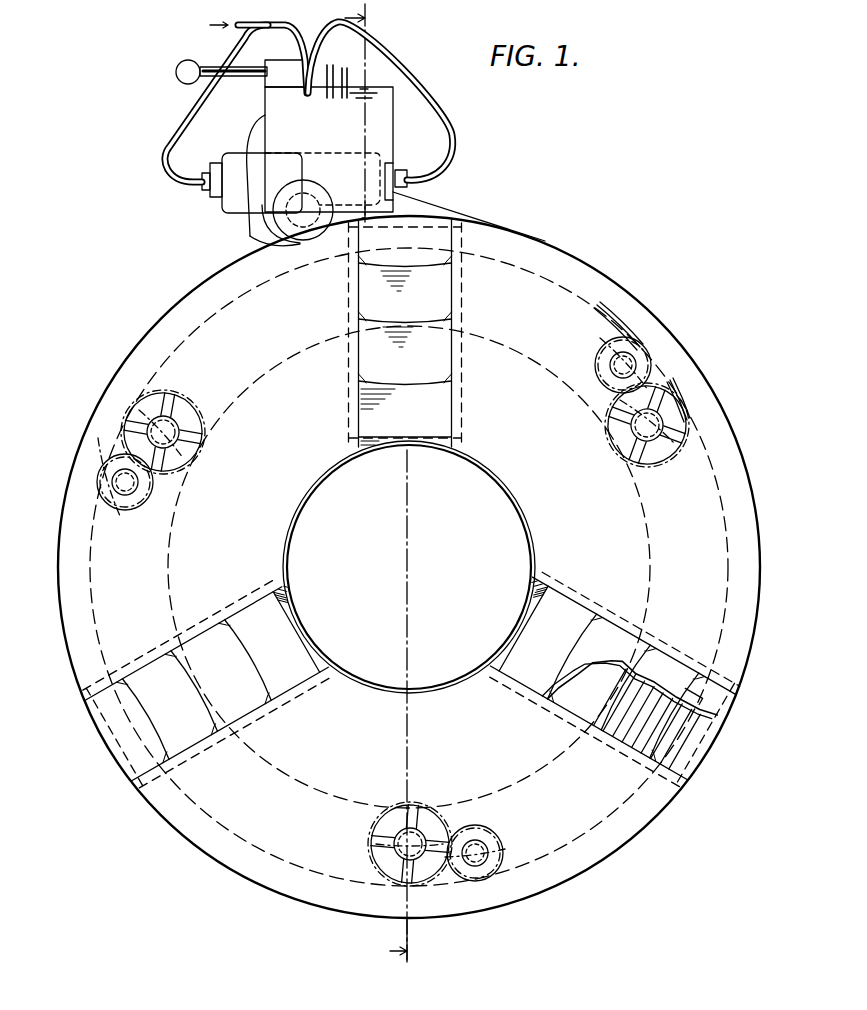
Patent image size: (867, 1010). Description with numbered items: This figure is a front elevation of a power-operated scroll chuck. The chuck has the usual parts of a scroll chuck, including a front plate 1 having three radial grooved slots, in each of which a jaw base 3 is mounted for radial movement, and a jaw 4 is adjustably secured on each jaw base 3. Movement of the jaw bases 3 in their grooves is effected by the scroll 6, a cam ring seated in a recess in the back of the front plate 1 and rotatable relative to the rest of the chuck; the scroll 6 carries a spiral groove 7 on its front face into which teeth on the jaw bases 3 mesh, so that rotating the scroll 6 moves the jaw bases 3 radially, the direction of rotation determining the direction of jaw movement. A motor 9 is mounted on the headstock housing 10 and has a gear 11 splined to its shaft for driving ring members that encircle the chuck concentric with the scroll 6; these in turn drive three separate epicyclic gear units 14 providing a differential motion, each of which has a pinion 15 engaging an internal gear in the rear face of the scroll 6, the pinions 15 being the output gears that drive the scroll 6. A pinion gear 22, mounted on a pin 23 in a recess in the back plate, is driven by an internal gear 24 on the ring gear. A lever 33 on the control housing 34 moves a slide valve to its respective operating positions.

The front plate 1 is at (200, 330).
The jaw base 3 is at (503, 702).
The jaw 4 is at (366, 366).
The scroll 6 is at (657, 728).
The spiral groove 7 is at (675, 715).
The motor 9 is at (255, 130).
The headstock housing 10 is at (516, 255).
The gear 11 is at (262, 219).
The epicyclic gear unit 14 is at (213, 447).
The pinion 15 is at (421, 826).
The pinion gear 22 is at (130, 514).
The pin 23 is at (621, 365).
The internal gear 24 is at (617, 318).
The lever 33 is at (206, 66).
The control housing 34 is at (384, 140).